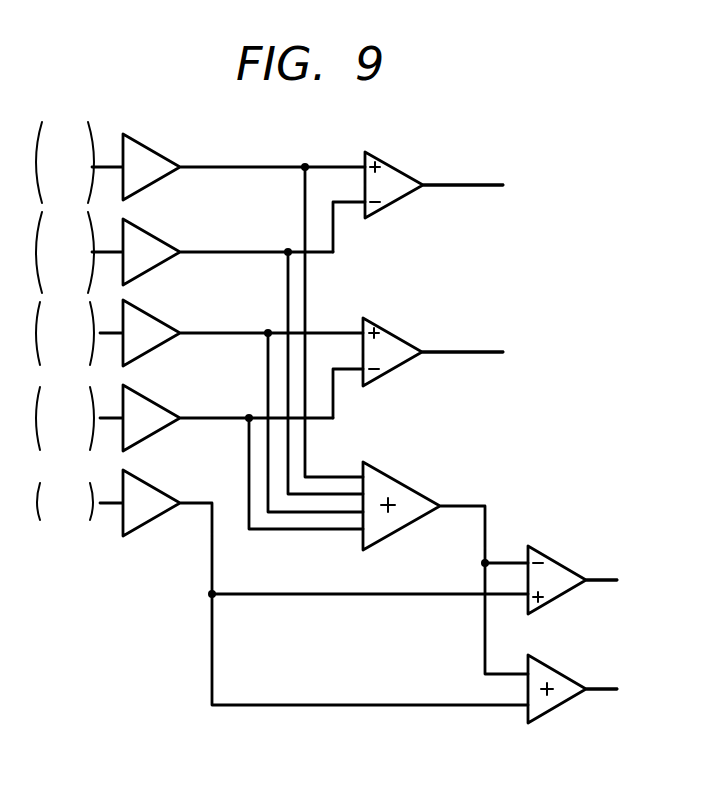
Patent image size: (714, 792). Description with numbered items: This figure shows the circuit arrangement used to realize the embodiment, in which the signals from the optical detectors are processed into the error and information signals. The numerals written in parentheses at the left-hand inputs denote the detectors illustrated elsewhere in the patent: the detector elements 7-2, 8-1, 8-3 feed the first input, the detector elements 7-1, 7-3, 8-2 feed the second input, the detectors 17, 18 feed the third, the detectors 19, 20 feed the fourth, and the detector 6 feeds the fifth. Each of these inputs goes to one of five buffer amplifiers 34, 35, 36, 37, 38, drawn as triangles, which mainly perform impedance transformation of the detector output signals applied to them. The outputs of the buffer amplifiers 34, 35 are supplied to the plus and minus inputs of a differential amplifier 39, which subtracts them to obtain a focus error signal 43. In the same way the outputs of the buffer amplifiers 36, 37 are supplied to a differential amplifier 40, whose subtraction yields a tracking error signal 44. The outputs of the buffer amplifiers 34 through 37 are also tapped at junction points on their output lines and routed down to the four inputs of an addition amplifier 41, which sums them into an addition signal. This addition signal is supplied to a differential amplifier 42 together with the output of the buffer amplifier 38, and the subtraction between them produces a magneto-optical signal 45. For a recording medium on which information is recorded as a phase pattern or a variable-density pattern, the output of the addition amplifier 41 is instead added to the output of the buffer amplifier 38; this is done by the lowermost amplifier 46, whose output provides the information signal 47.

The buffer amplifier 34 is at (157, 151).
The buffer amplifier 35 is at (157, 237).
The buffer amplifier 36 is at (157, 320).
The buffer amplifier 37 is at (157, 406).
The buffer amplifier 38 is at (157, 491).
The differential amplifier 39 is at (405, 174).
The differential amplifier 40 is at (402, 340).
The addition amplifier 41 is at (405, 484).
The differential amplifier 42 is at (561, 567).
The focus error signal 43 is at (480, 185).
The tracking error signal 44 is at (479, 352).
The magneto-optical signal 45 is at (618, 580).
The summing amplifier 46 is at (561, 676).
The output signal 47 is at (618, 689).
The sensor input 6 is at (64, 503).
The sensor input 17 is at (65, 322).
The sensor input 18 is at (65, 348).
The sensor input 19 is at (65, 405).
The sensor input 20 is at (65, 433).
The sensor element input 7-1 is at (64, 227).
The sensor element input 7-2 is at (64, 142).
The sensor element input 7-3 is at (64, 252).
The sensor element input 8-1 is at (64, 165).
The sensor element input 8-2 is at (64, 277).
The sensor element input 8-3 is at (64, 188).